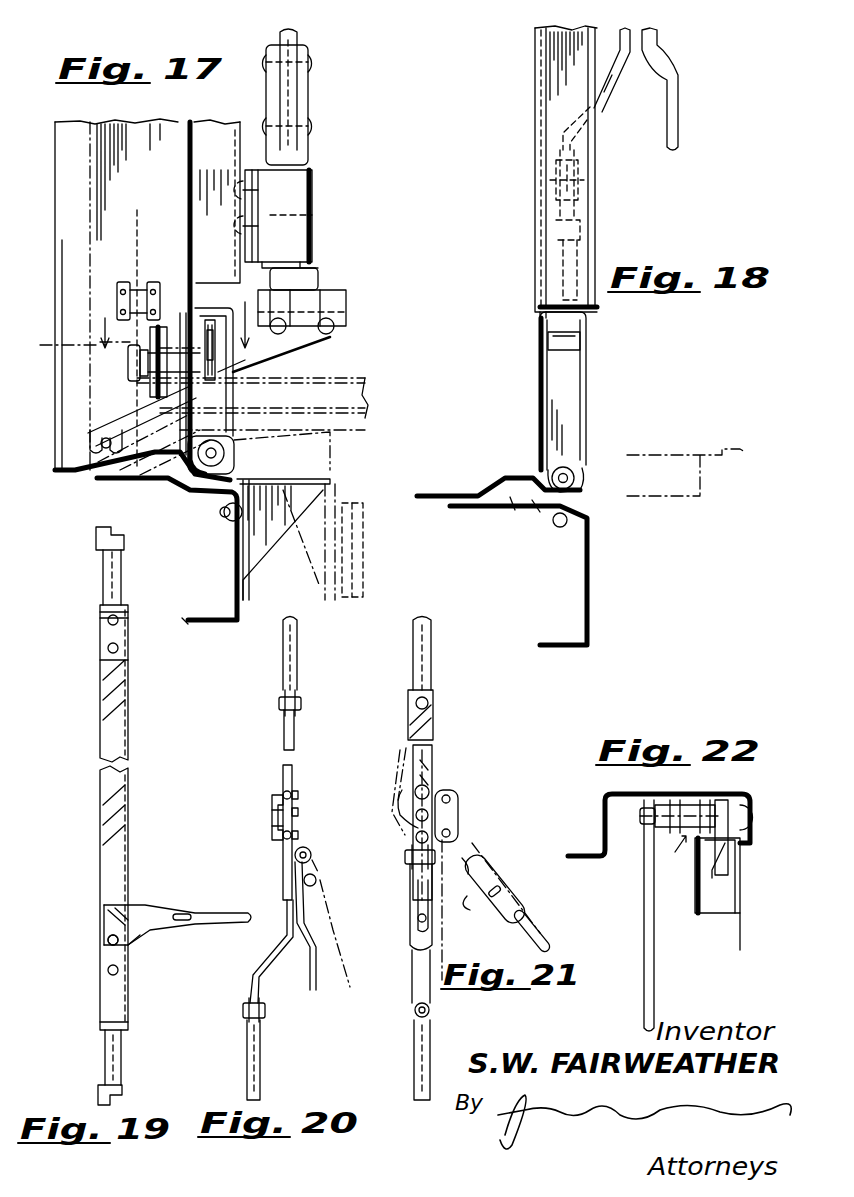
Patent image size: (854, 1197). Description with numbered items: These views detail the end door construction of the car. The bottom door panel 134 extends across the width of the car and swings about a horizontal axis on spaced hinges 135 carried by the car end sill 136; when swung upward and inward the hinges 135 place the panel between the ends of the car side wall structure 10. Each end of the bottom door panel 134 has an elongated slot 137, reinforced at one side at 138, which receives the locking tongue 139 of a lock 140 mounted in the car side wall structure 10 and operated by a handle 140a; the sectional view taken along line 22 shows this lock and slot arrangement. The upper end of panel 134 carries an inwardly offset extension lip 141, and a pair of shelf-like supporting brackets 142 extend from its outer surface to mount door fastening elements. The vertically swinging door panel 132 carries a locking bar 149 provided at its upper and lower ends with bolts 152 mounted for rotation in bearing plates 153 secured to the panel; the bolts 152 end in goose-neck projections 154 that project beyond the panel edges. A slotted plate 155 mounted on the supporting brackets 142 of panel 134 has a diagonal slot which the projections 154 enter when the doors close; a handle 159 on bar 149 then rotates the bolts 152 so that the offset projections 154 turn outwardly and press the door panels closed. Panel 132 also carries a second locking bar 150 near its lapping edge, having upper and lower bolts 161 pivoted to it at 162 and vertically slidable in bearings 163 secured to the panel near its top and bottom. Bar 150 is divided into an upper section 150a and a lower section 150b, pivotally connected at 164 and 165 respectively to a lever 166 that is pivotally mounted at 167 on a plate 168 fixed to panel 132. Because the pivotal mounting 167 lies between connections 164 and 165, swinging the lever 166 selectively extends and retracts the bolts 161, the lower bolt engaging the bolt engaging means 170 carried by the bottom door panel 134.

In FIG. 17, the car side wall structure 10 is at (130, 145).
In FIG. 22, the car side wall structure 10 is at (620, 794).
In FIG. 17, the section line 22— 22 is at (146, 315).
In FIG. 17, the door panel 132 is at (208, 135).
In FIG. 18, the door panel 132 is at (535, 92).
In FIG. 17, the bottom door panel 134 is at (250, 366).
In FIG. 18, the bottom door panel 134 is at (588, 396).
In FIG. 22, the bottom door panel 134 is at (748, 913).
In FIG. 17, the hinge 135 is at (226, 455).
In FIG. 18, the hinge 135 is at (575, 478).
In FIG. 17, the car end sill 136 is at (286, 539).
In FIG. 17, the elongated slot 137 is at (205, 320).
In FIG. 22, the elongated slot 137 is at (726, 870).
In FIG. 17, the reinforcement 138 is at (150, 372).
In FIG. 22, the reinforcement 138 is at (706, 875).
In FIG. 17, the locking tongue 139 is at (215, 343).
In FIG. 22, the locking tongue 139 is at (730, 848).
In FIG. 17, the lock 140 is at (130, 360).
In FIG. 22, the lock 140 is at (680, 837).
In FIG. 17, the handle 140a is at (128, 352).
In FIG. 22, the handle 140a is at (644, 924).
In FIG. 17, the inwardly offset extension lip 141 is at (190, 258).
In FIG. 18, the inwardly offset extension lip 141 is at (535, 288).
In FIG. 17, the supporting bracket 142 is at (332, 337).
In FIG. 17, the locking bar 149 is at (300, 40).
In FIG. 19, the locking bar 149 is at (103, 805).
In FIG. 20, the locking bar 150 is at (296, 728).
In FIG. 21, the locking bar 150 is at (434, 728).
In FIG. 20, the upper section of locking bar 150a is at (283, 785).
In FIG. 21, the upper section of locking bar 150a is at (434, 760).
In FIG. 18, the lower section of locking bar 150b is at (615, 92).
In FIG. 20, the lower section of locking bar 150b is at (285, 892).
In FIG. 21, the lower section of locking bar 150b is at (426, 921).
In FIG. 17, the bolt 152 is at (312, 214).
In FIG. 19, the bolt 152 is at (112, 590).
In FIG. 17, the bearing plate 153 is at (312, 195).
In FIG. 17, the goose-neck projection 154 is at (320, 280).
In FIG. 19, the goose-neck projection 154 is at (96, 540).
In FIG. 17, the slotted plate 155 is at (346, 302).
In FIG. 19, the handle 159 is at (140, 908).
In FIG. 18, the bolt 161 is at (582, 258).
In FIG. 20, the bolt 161 is at (297, 655).
In FIG. 21, the bolt 161 is at (430, 652).
In FIG. 18, the pivot 162 is at (582, 176).
In FIG. 20, the pivot 162 is at (300, 706).
In FIG. 21, the pivot 162 is at (428, 704).
In FIG. 18, the bearing 163 is at (582, 236).
In FIG. 20, the pivotal connection 164 is at (298, 795).
In FIG. 21, the pivotal connection 164 is at (410, 765).
In FIG. 20, the pivotal connection 165 is at (280, 838).
In FIG. 21, the pivotal connection 165 is at (435, 830).
In FIG. 18, the lever 166 is at (672, 65).
In FIG. 20, the lever 166 is at (312, 876).
In FIG. 21, the lever 166 is at (485, 852).
In FIG. 20, the pivotal mounting 167 is at (300, 812).
In FIG. 21, the pivotal mounting 167 is at (413, 815).
In FIG. 20, the plate 168 is at (272, 805).
In FIG. 21, the plate 168 is at (458, 800).
In FIG. 18, the bolt engaging means 170 is at (585, 338).